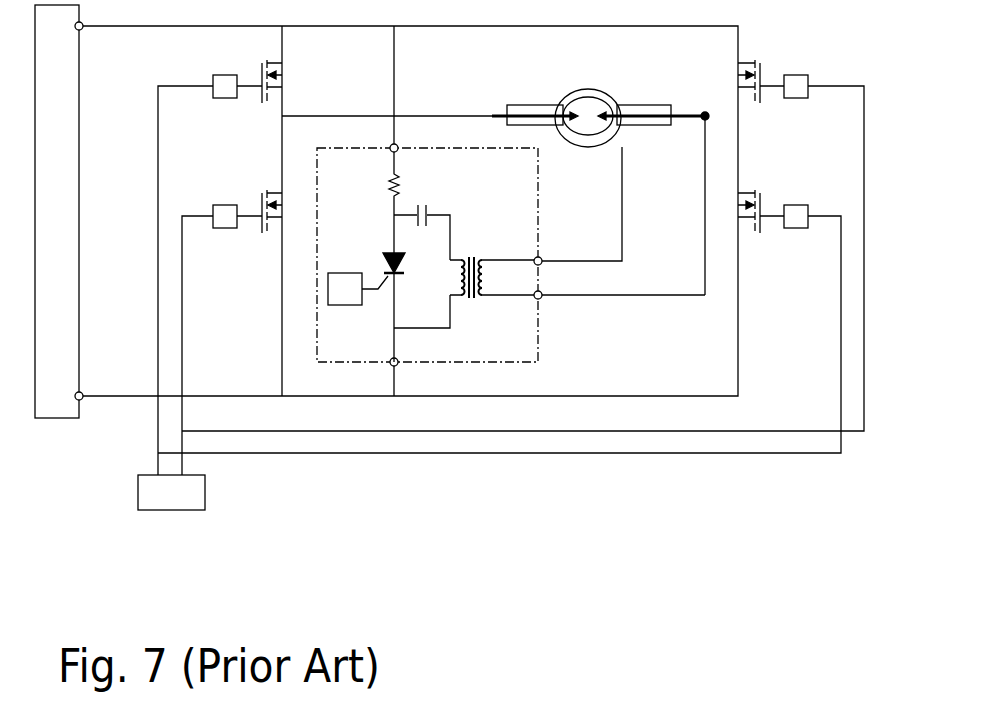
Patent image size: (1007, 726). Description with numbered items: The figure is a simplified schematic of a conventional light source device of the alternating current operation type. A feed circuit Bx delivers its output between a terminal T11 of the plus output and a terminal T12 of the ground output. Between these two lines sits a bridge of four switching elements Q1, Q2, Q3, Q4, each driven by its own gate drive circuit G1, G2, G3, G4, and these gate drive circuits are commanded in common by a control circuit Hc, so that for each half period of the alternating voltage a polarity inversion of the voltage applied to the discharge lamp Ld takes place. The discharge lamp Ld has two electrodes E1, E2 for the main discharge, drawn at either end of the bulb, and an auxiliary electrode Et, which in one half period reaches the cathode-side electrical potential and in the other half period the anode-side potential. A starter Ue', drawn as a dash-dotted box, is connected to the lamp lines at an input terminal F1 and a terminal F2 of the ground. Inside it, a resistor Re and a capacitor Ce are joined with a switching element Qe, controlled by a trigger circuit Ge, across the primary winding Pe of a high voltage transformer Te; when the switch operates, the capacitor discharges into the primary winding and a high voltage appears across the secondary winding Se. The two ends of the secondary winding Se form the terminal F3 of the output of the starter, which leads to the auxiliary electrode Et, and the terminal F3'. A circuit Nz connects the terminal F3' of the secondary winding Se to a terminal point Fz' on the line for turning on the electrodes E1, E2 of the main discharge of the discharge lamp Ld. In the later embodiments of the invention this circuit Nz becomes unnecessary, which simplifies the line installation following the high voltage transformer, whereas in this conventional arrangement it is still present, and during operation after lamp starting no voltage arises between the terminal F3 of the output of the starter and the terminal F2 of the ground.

The feed circuit Bx is at (57, 211).
The terminal of the plus output of the feed circuit T11 is at (83, 29).
The terminal of the ground output of the feed circuit T12 is at (83, 393).
The switching element Q1 is at (262, 64).
The switching element Q2 is at (262, 194).
The switching element Q3 is at (760, 64).
The switching element Q4 is at (760, 194).
The gate drive circuit G1 is at (227, 99).
The gate drive circuit G2 is at (227, 229).
The gate drive circuit G3 is at (797, 99).
The gate drive circuit G4 is at (797, 229).
The control circuit Hc is at (171, 492).
The starter Ue' is at (456, 268).
The input terminal of the starter F1 is at (399, 146).
The terminal of the ground of the starter F2 is at (399, 365).
The terminal of the output of the starter F3 is at (578, 206).
The terminal of the secondary winding F3' is at (619, 315).
The resistor Re is at (392, 183).
The capacitor Ce is at (430, 204).
The switching element Qe is at (390, 252).
The trigger circuit Ge is at (358, 289).
The high voltage transformer Te is at (466, 273).
The primary winding Pe is at (466, 278).
The secondary winding Se is at (488, 286).
The circuit Nz is at (705, 229).
The terminal point Fz' is at (706, 93).
The discharge lamp Ld is at (598, 112).
The auxiliary electrode Et is at (560, 140).
The electrode E1 is at (614, 106).
The electrode E2 is at (568, 106).